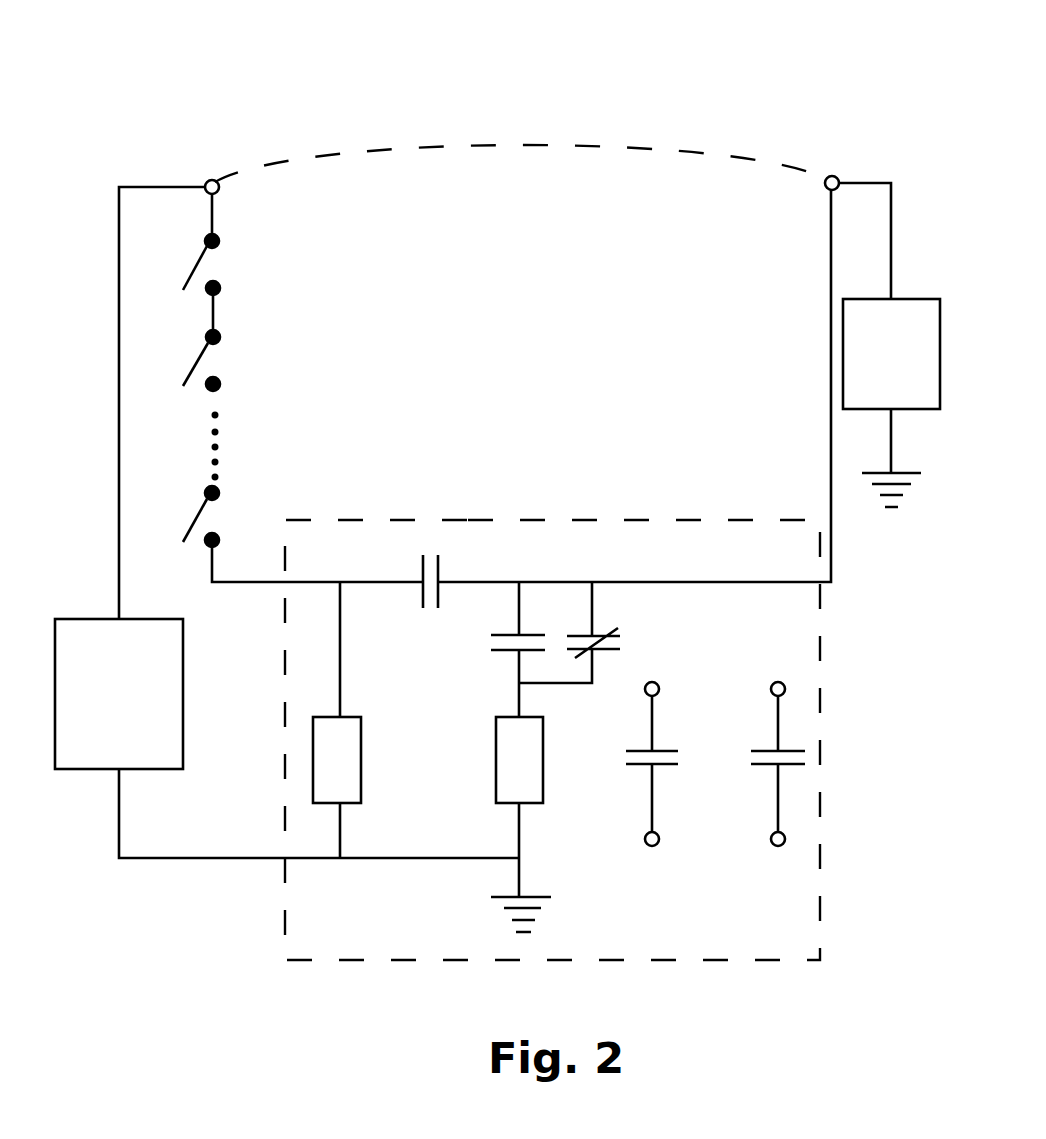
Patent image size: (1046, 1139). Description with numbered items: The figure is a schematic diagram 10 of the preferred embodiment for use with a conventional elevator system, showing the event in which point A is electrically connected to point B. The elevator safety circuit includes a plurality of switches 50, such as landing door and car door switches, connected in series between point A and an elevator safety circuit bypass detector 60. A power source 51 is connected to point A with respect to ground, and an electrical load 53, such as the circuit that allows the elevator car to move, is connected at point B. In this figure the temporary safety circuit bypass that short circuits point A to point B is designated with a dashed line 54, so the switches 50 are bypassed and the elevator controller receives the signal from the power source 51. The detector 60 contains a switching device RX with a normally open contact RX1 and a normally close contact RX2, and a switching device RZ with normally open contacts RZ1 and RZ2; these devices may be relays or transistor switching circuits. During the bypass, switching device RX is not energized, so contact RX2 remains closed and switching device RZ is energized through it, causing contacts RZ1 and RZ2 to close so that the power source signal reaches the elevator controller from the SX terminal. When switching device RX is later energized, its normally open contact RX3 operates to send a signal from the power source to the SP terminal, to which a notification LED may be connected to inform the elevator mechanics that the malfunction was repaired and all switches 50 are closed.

The schematic diagram 10 is at (296, 48).
The switches 50 is at (195, 263).
The power source 51 is at (103, 620).
The electrical load 53 is at (888, 297).
The dashed line 54 is at (532, 144).
The elevator safety circuit bypass detector 60 is at (500, 520).
The normally open contact RX1 is at (390, 575).
The normally close contact RX2 is at (615, 629).
The normally open contact RX3 is at (757, 785).
The normally open contact RZ1 is at (494, 664).
The normally open contact RZ2 is at (676, 742).
The switching device RX is at (361, 760).
The switching device RZ is at (545, 760).
The SX terminal SX is at (650, 749).
The SP terminal SP is at (774, 749).